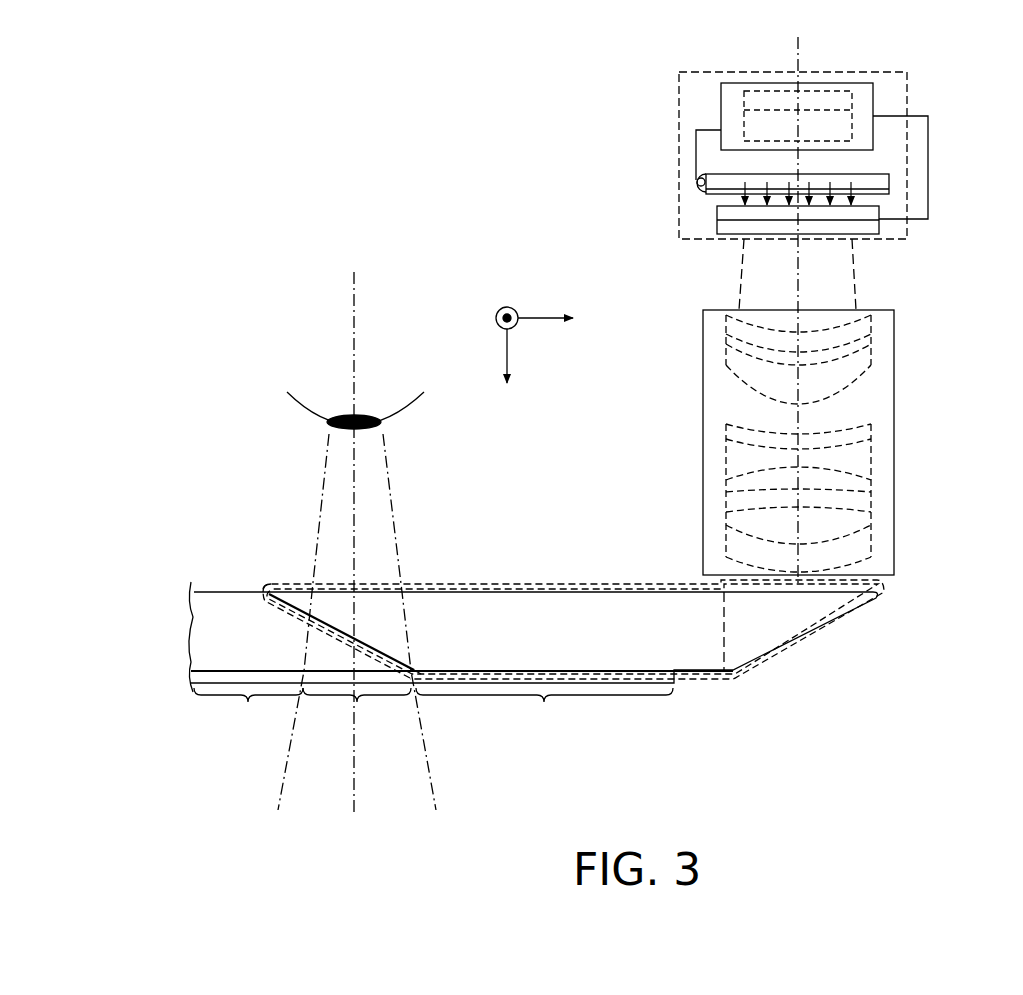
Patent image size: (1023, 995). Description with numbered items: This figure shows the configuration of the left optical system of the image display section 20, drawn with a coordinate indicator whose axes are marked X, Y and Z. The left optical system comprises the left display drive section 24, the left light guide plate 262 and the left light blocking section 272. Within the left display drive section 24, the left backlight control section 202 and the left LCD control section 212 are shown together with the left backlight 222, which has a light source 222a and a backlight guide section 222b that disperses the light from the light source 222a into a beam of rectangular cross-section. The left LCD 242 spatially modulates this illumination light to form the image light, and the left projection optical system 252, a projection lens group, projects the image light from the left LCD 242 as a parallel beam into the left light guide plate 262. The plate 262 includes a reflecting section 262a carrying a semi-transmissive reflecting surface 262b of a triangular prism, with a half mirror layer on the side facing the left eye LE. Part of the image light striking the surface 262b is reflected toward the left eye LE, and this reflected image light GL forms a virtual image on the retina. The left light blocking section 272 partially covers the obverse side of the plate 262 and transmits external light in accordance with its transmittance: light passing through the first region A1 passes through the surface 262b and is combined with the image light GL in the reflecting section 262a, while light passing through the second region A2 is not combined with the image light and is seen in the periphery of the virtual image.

The image display section 20 is at (367, 136).
The left display drive section 24 is at (935, 60).
The left backlight control section 202 is at (762, 120).
The left LCD control section 212 is at (825, 88).
The left backlight 222 is at (659, 162).
The light source 222a is at (690, 182).
The backlight guide section 222b is at (728, 168).
The left LCD 242 is at (877, 222).
The left projection optical system 252 is at (676, 426).
The left light guide plate 262 is at (532, 576).
The reflecting section 262a is at (342, 640).
The semi-transmissive reflecting surface 262b is at (292, 583).
The left light blocking section 272 is at (432, 682).
The left eye LE is at (300, 407).
The image light GL is at (392, 505).
The first region A1 is at (357, 711).
The second region A2 is at (433, 711).
The X axis X is at (558, 318).
The Y axis Y is at (497, 307).
The Z axis Z is at (508, 372).